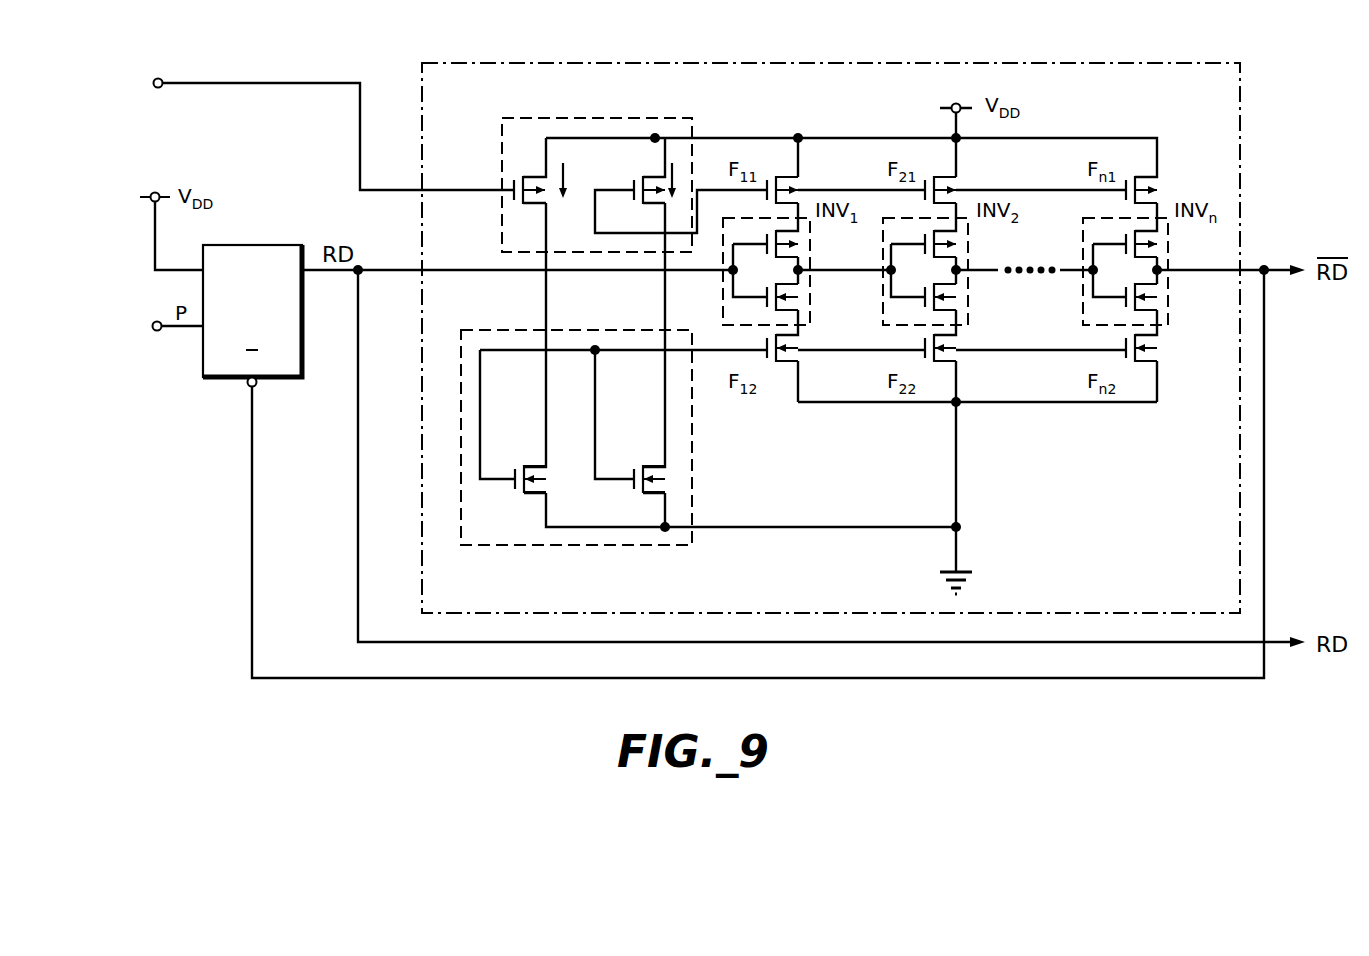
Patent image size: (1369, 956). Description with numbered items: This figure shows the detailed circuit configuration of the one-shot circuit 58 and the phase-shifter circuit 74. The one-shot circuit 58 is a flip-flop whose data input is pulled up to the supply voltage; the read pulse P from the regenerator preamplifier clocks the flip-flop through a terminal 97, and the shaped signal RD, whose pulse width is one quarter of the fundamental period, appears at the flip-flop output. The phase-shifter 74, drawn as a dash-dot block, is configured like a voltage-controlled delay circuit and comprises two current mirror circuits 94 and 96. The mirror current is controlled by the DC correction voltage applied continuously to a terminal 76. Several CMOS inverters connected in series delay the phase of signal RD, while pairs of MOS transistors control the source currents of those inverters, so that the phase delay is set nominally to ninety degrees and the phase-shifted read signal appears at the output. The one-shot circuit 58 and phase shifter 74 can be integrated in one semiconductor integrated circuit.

The phase-shifter circuit 74 is at (519, 56).
The terminal 76 is at (161, 79).
The one-shot circuit 58 is at (232, 243).
The current mirror circuit 94 is at (580, 116).
The current mirror circuit 96 is at (560, 550).
The terminal 97 is at (152, 331).